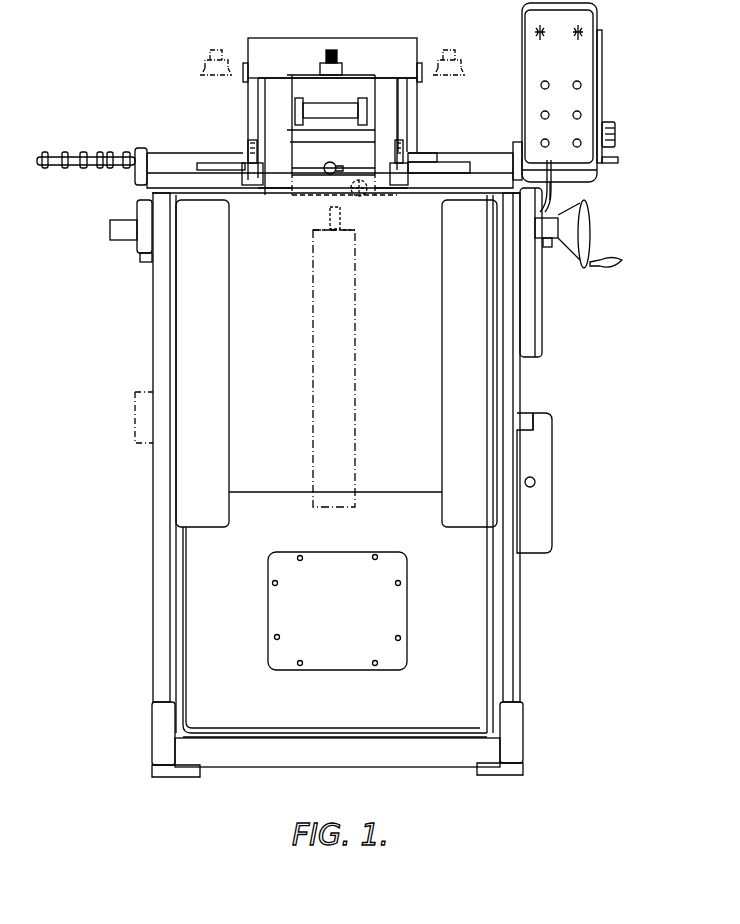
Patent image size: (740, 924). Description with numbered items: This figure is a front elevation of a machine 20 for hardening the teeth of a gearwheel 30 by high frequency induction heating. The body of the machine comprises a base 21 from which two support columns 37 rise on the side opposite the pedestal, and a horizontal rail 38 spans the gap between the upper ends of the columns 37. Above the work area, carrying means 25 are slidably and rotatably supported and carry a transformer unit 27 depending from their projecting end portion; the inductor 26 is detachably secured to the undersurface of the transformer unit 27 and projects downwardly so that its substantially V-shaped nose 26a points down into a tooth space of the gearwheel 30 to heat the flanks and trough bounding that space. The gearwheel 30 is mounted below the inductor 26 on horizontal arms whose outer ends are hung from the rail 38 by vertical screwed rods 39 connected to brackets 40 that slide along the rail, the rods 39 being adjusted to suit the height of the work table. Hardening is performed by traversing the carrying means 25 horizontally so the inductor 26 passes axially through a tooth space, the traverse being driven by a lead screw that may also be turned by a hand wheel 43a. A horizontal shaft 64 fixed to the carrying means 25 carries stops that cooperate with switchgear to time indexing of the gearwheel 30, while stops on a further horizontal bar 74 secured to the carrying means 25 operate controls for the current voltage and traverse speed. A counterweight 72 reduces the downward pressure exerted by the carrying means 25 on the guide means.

The machine 20 is at (540, 403).
The base 21 is at (442, 760).
The carrying means 25 is at (423, 127).
The inductor 26 is at (337, 218).
The nose of the inductor 26a is at (335, 230).
The transformer unit 27 is at (295, 152).
The gearwheel 30 is at (355, 480).
The support columns 37 is at (162, 583).
The horizontal rail 38 is at (470, 185).
The screwed rods 39 is at (257, 193).
The brackets 40 is at (250, 180).
The hand wheel 43a is at (573, 248).
The horizontal shaft 64 is at (118, 165).
The counterweight 72 is at (400, 42).
The horizontal bar 74 is at (72, 167).